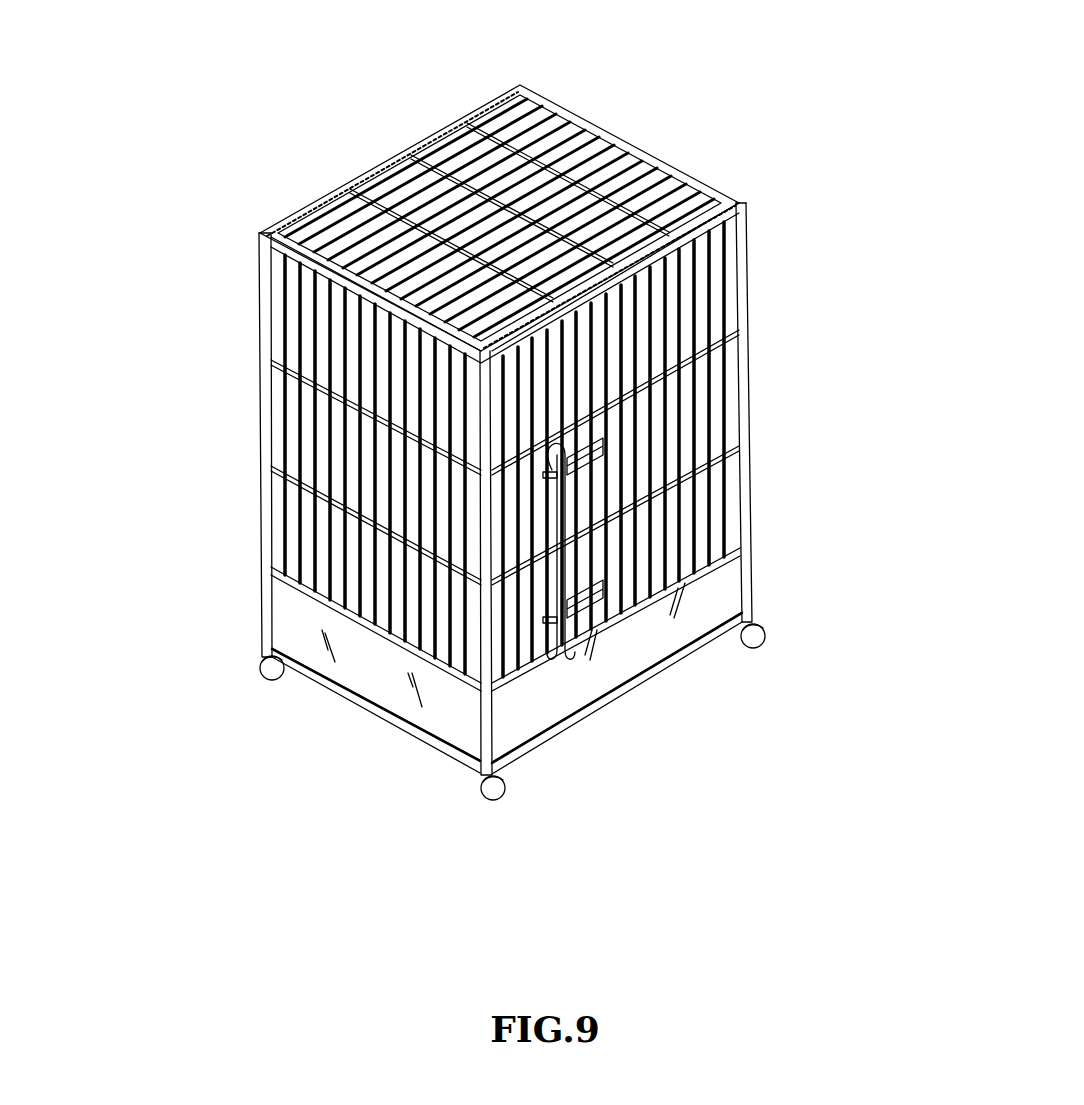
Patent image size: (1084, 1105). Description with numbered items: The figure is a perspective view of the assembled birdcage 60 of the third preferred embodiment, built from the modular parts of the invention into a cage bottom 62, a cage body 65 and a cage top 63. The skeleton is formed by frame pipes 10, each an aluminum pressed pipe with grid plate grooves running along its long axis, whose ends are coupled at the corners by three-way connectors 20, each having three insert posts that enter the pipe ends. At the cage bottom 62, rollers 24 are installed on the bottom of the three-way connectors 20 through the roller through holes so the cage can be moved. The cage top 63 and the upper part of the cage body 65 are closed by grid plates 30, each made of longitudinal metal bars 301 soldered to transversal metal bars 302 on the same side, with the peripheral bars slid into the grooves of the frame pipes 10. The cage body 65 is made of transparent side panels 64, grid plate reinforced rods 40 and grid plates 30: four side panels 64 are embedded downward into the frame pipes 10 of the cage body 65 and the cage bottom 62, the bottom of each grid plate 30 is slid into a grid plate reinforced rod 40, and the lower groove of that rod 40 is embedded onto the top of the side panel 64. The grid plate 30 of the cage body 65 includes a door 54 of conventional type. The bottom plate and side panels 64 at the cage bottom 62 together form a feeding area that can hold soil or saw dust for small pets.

The frame pipe 10 is at (450, 121).
The three-way connector 20 is at (524, 81).
The roller 24 is at (767, 636).
The grid plate 30 is at (563, 141).
The longitudinal metal bar 301 is at (617, 170).
The transversal metal bar 302 is at (643, 223).
The grid plate reinforced rod 40 is at (725, 515).
The door 54 is at (573, 658).
The birdcage 60 is at (840, 2).
The cage bottom 62 is at (797, 670).
The cage top 63 is at (463, 15).
The transparent side panel 64 is at (735, 570).
The cage body 65 is at (160, 222).